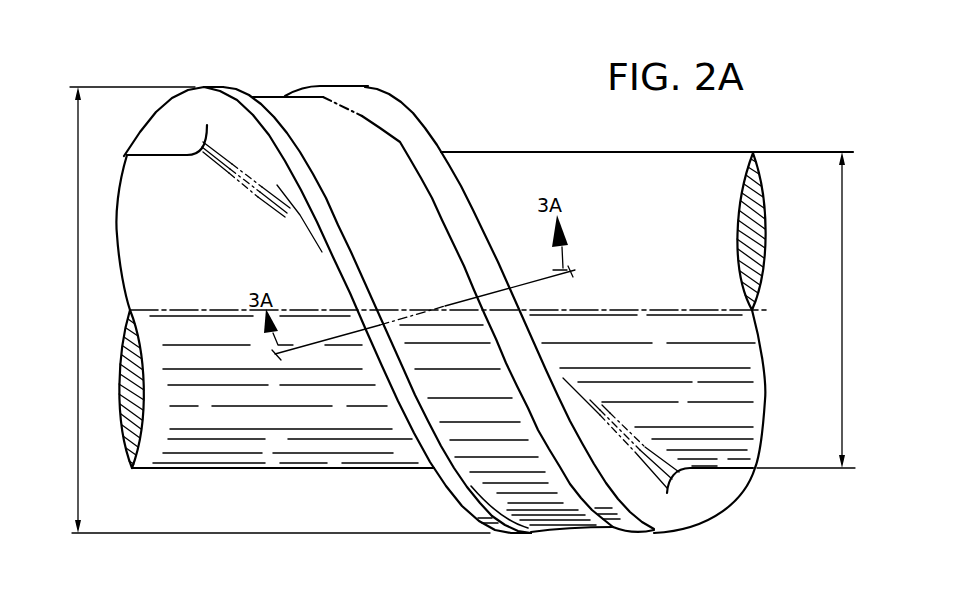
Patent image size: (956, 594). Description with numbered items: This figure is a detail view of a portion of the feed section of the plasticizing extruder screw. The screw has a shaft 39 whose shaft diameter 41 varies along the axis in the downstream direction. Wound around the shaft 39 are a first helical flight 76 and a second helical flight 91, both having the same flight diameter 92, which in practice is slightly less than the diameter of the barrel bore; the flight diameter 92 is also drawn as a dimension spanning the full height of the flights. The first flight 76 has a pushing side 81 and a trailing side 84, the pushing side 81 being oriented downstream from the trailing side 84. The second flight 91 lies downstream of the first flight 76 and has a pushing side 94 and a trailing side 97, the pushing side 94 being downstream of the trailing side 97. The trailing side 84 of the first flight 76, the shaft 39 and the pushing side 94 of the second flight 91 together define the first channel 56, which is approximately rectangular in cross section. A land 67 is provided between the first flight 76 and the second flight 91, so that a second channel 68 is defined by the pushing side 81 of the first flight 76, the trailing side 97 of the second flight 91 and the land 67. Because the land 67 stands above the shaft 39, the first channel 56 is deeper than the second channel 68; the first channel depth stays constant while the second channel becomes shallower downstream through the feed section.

The first channel 56 is at (496, 140).
The shaft 39 is at (657, 150).
The shaft diameter 41 is at (842, 312).
The flight diameter 92 is at (78, 343).
The second helical flight 91 is at (197, 87).
The trailing side 97 is at (223, 88).
The land 67 is at (273, 96).
The pushing side 81 is at (313, 92).
The first helical flight 76 is at (361, 86).
The trailing side 84 is at (422, 121).
The pushing side 94 is at (183, 127).
The second channel 68 is at (573, 533).